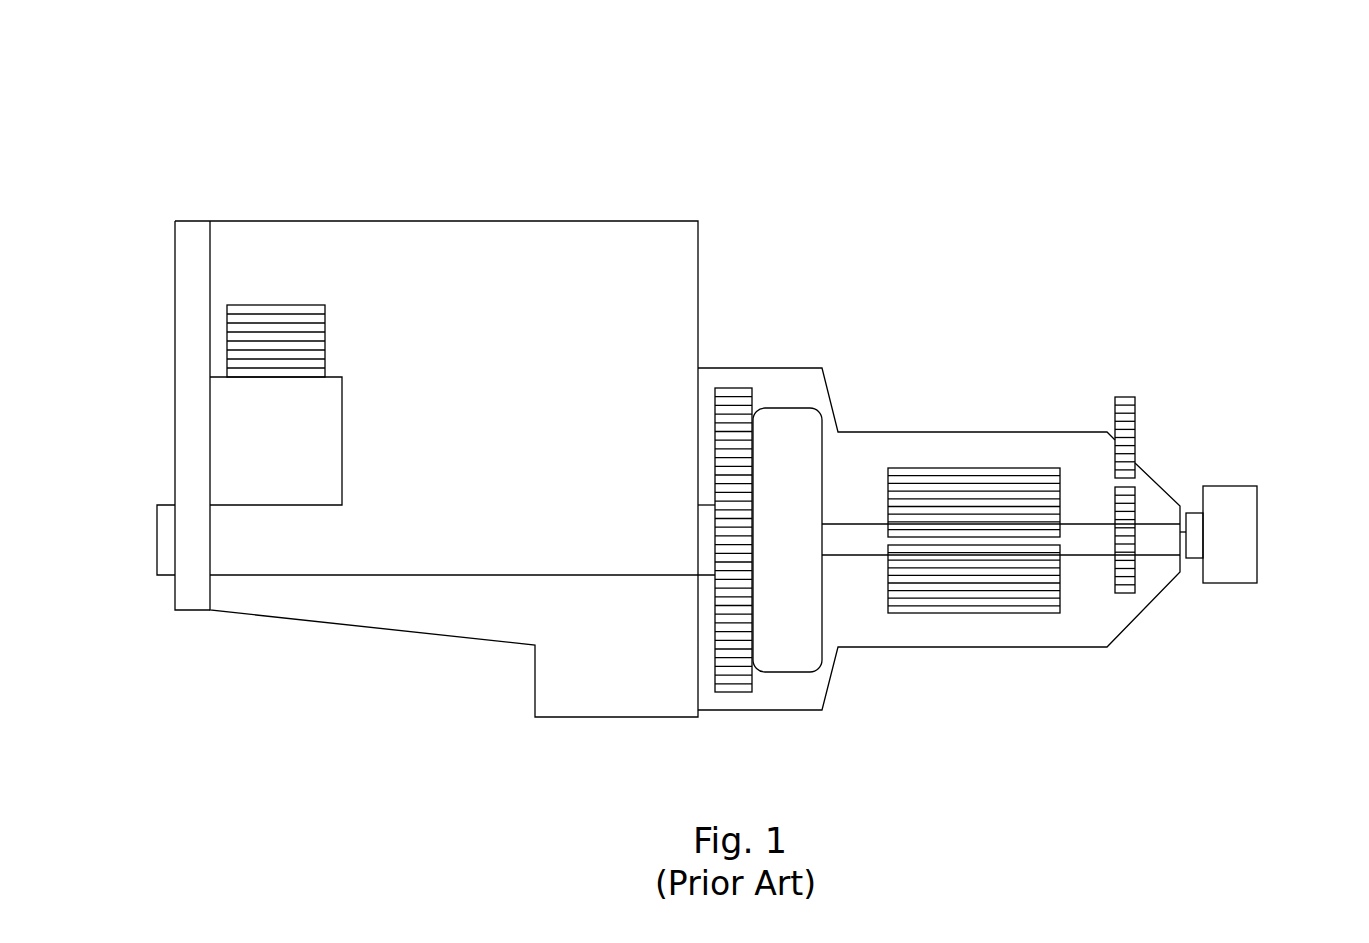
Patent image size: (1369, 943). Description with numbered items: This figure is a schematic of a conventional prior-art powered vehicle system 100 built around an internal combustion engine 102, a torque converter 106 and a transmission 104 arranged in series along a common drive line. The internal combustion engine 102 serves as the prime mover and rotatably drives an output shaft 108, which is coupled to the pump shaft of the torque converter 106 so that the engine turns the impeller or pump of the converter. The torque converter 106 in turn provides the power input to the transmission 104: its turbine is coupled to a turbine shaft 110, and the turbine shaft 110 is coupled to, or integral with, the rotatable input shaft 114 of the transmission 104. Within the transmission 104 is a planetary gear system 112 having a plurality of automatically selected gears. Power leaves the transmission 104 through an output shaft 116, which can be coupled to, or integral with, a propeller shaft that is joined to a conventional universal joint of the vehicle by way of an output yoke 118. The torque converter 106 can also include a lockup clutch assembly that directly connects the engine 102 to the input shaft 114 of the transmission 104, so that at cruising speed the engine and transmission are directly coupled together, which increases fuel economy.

The powered vehicle system 100 is at (186, 140).
The internal combustion engine 102 is at (402, 238).
The transmission 104 is at (895, 432).
The torque converter 106 is at (782, 425).
The output shaft 108 is at (705, 541).
The turbine shaft 110 is at (850, 545).
The planetary gear system 112 is at (1006, 468).
The input shaft 114 is at (1082, 546).
The output shaft 116 is at (1155, 533).
The output yoke 118 is at (1257, 532).